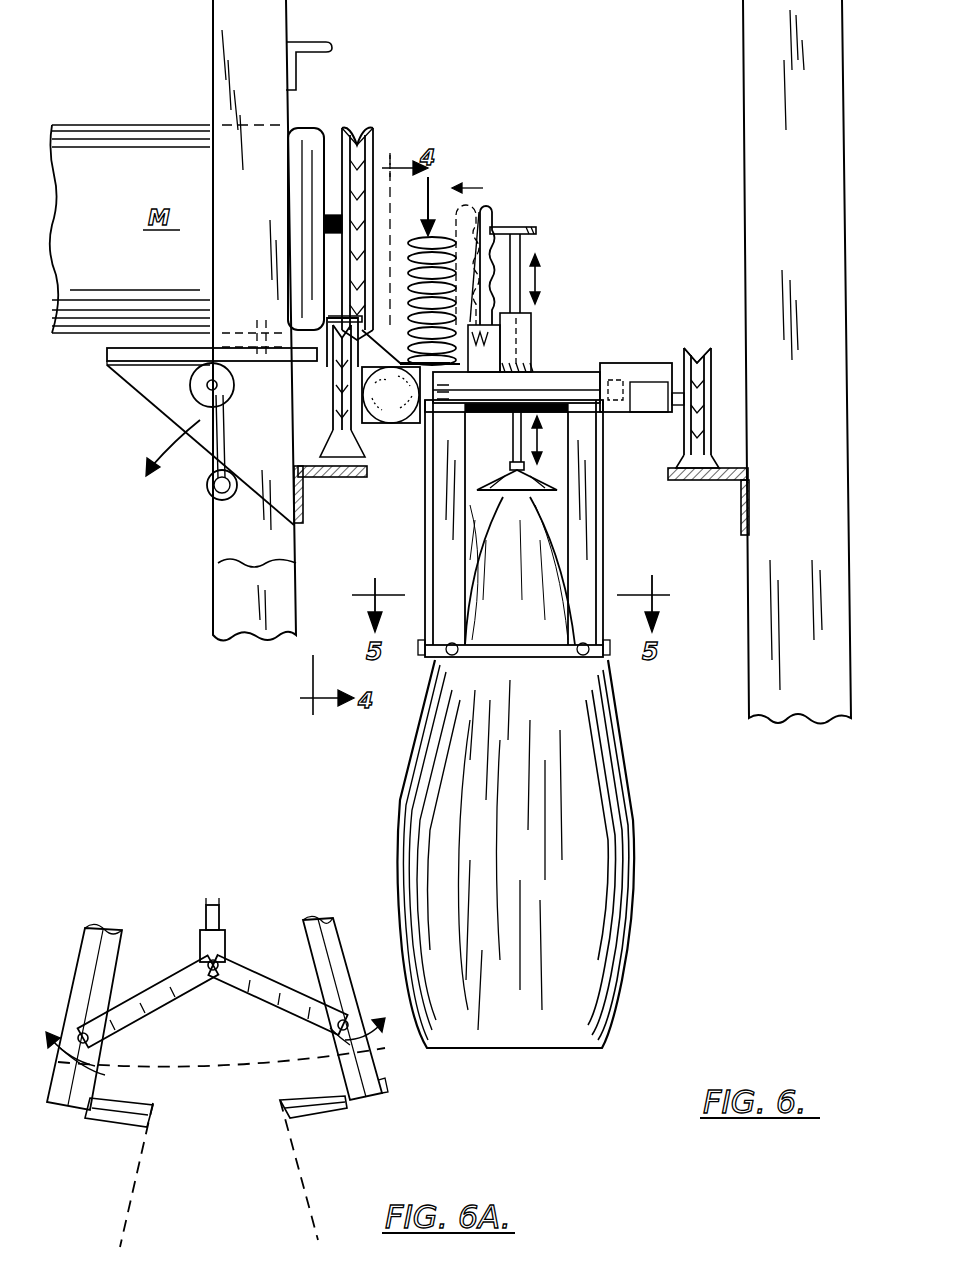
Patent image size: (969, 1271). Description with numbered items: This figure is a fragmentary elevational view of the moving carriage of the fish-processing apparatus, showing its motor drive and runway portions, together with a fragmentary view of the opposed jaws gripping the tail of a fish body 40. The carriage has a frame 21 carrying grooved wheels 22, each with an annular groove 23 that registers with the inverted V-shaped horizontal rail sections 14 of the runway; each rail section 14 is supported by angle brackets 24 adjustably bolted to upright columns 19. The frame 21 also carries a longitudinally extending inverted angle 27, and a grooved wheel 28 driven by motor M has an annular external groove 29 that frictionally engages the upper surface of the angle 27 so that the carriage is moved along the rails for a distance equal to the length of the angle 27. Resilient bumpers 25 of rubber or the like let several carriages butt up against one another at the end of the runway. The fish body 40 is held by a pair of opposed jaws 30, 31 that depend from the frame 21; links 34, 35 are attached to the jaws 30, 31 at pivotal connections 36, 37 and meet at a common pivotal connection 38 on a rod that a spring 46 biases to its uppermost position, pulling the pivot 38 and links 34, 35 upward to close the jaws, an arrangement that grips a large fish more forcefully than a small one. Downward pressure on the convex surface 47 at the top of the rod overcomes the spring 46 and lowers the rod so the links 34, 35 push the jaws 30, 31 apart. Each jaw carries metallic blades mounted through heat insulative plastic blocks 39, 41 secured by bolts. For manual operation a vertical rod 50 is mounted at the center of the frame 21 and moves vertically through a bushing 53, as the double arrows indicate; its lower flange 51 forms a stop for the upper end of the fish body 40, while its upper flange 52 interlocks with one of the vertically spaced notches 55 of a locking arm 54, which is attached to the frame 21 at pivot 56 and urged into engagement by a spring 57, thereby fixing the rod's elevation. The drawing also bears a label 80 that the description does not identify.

In FIG. 6, the horizontal rail section 14 is at (345, 480).
In FIG. 6, the column 19 is at (232, 597).
In FIG. 6, the frame 21 is at (592, 364).
In FIG. 6, the wheel 22 is at (358, 442).
In FIG. 6, the annular groove 23 is at (700, 322).
In FIG. 6, the angle bracket 24 is at (300, 522).
In FIG. 6, the bumper 25 is at (380, 426).
In FIG. 6, the inverted angle 27 is at (334, 352).
In FIG. 6, the grooved wheel 28 is at (375, 140).
In FIG. 6, the annular external groove 29 is at (351, 112).
In FIG. 6A, the jaw 30 is at (150, 1012).
In FIG. 6, the jaw 31 is at (446, 602).
In FIG. 6A, the jaw 31 is at (330, 975).
In FIG. 6A, the link 34 is at (165, 982).
In FIG. 6A, the link 35 is at (258, 968).
In FIG. 6A, the pivotal connection 36 is at (100, 1068).
In FIG. 6A, the pivotal connection 37 is at (362, 1042).
In FIG. 6A, the pivotal connection 38 is at (212, 985).
In FIG. 6A, the heat insulative plastic block 39 is at (124, 1130).
In FIG. 6, the fish body 40 is at (530, 726).
In FIG. 6A, the fish body 40 is at (232, 1194).
In FIG. 6A, the heat insulative plastic block 41 is at (316, 1120).
In FIG. 6, the spring 46 is at (413, 264).
In FIG. 6, the convex surface 47 is at (436, 238).
In FIG. 6, the vertical rod 50 is at (522, 246).
In FIG. 6, the flange 51 is at (548, 480).
In FIG. 6, the flange 52 is at (537, 231).
In FIG. 6, the bushing 53 is at (532, 332).
In FIG. 6, the locking arm 54 is at (478, 216).
In FIG. 6, the notch 55 is at (495, 216).
In FIG. 6, the pivot 56 is at (486, 354).
In FIG. 6, the spring 57 is at (522, 382).
In FIG. 6, the bottle assembly 80 is at (660, 826).